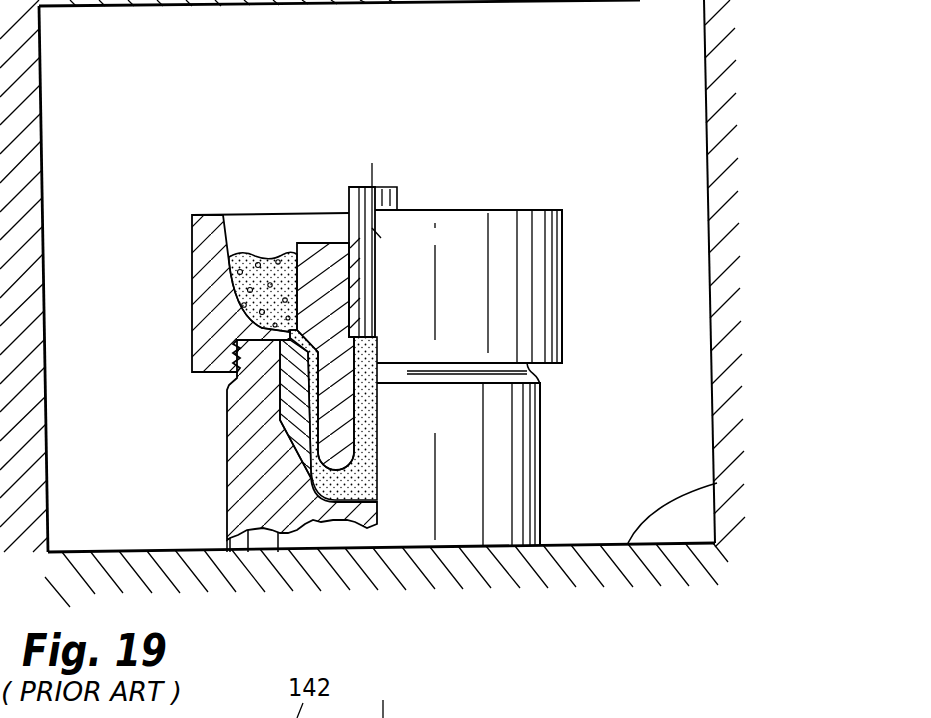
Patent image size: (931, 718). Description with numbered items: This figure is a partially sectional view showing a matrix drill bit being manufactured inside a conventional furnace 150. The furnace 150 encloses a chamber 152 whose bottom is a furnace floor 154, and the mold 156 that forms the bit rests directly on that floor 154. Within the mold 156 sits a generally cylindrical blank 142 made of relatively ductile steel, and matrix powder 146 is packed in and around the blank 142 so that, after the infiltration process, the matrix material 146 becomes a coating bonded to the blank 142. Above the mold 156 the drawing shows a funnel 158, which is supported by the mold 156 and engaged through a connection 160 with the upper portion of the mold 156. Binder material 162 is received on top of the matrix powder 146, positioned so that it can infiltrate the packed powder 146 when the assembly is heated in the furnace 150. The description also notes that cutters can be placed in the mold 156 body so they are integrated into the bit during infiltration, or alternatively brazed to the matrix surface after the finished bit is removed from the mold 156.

The blank 142 is at (305, 268).
The matrix material 146 is at (310, 484).
The furnace 150 is at (712, 118).
The chamber 152 is at (635, 358).
The furnace floor 154 is at (715, 492).
The mold 156 is at (503, 470).
The funnel 158 is at (525, 276).
The connection 160 is at (232, 350).
The binder material 162 is at (230, 277).